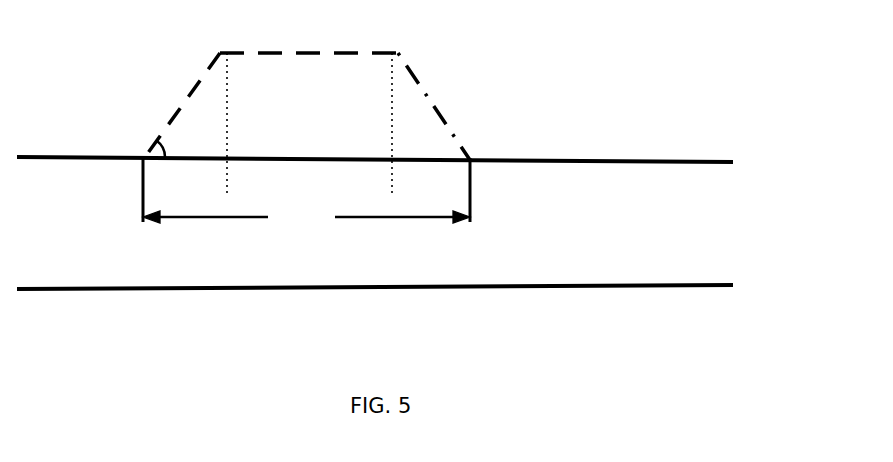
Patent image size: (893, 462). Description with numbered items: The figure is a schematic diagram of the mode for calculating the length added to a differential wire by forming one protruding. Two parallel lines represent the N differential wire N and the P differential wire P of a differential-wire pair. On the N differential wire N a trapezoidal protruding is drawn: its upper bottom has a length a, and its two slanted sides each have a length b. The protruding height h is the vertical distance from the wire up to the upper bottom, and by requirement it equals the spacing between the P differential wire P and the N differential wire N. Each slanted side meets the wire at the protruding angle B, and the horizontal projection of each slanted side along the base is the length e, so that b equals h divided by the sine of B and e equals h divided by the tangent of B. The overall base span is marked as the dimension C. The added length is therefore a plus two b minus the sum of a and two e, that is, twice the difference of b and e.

The N differential wire N is at (397, 160).
The P differential wire P is at (394, 295).
The length of the upper bottom of the trapezoid a is at (309, 102).
The slanted side length of the protruding b is at (300, 106).
The protruding height h is at (309, 123).
The protruding angle B is at (183, 136).
The base extension length of the protruding e is at (309, 177).
The total base width C is at (306, 201).